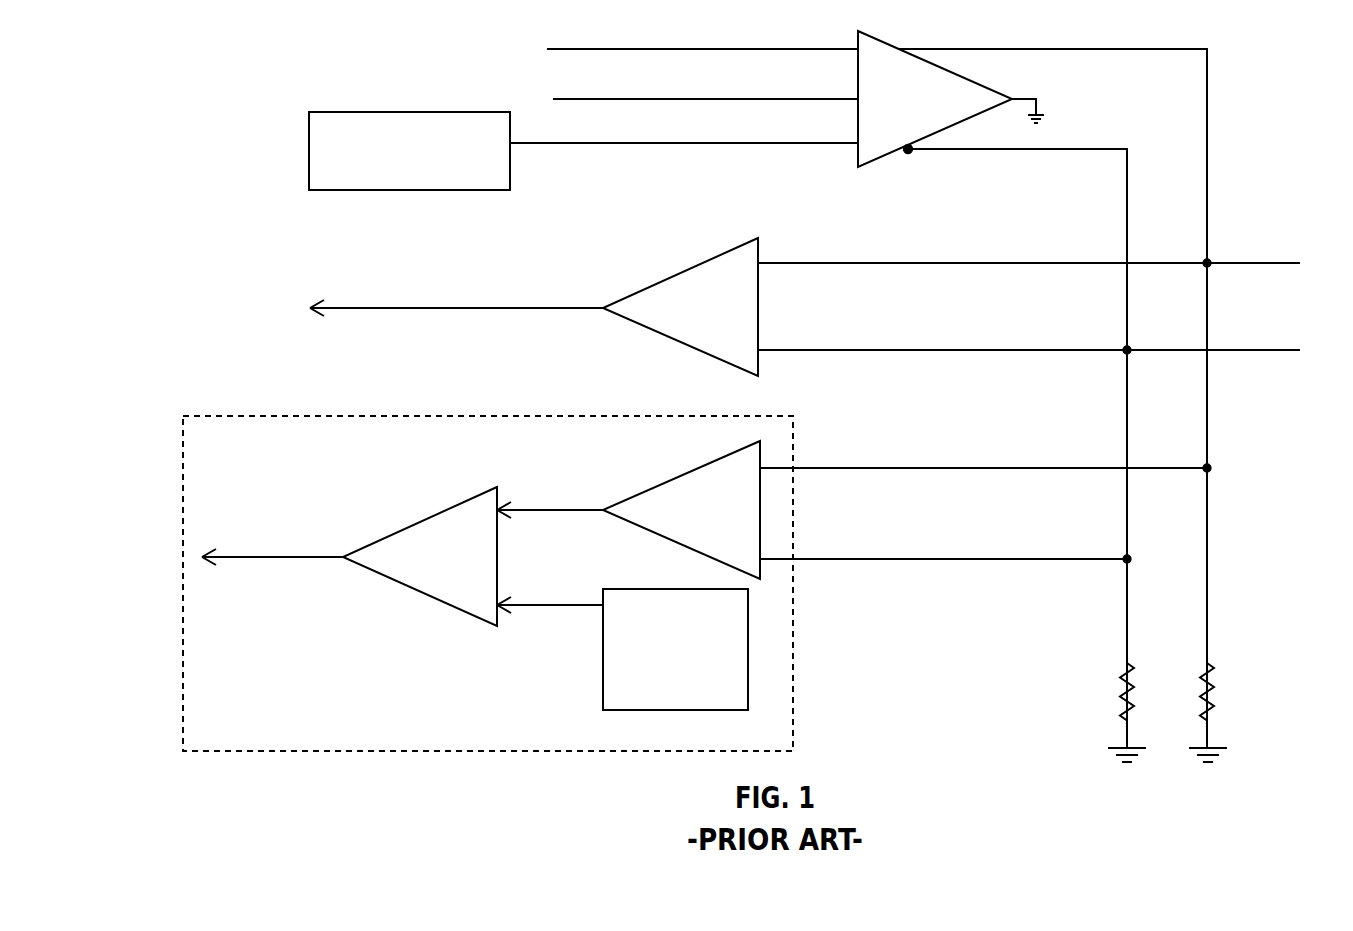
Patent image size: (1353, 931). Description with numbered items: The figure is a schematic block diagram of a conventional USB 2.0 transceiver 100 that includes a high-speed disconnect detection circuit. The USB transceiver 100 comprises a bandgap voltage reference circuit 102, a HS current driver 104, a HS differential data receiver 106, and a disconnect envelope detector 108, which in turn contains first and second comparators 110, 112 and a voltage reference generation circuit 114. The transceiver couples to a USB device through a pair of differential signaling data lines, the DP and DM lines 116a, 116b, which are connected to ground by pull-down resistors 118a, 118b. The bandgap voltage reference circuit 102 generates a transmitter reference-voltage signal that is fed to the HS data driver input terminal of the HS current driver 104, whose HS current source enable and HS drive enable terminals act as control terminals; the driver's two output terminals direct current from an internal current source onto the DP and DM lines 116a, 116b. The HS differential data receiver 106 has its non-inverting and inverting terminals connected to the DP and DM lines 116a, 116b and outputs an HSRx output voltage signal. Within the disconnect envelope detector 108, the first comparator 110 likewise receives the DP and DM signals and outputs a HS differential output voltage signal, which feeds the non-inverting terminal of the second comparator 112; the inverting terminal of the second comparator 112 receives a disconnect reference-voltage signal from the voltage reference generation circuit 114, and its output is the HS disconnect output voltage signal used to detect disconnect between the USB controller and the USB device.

The USB 2.0 transceiver 100 is at (1093, 779).
The bandgap voltage reference circuit 102 is at (370, 112).
The HS current driver 104 is at (880, 41).
The HS differential data receiver 106 is at (638, 290).
The disconnect envelope detector 108 is at (252, 416).
The first comparator 110 is at (645, 491).
The second comparator 112 is at (393, 531).
The voltage reference generation circuit 114 is at (617, 590).
The DP line 116a is at (1225, 263).
The DM line 116b is at (1225, 350).
The pull-down resistor 118a is at (1120, 712).
The pull-down resistor 118b is at (1212, 701).